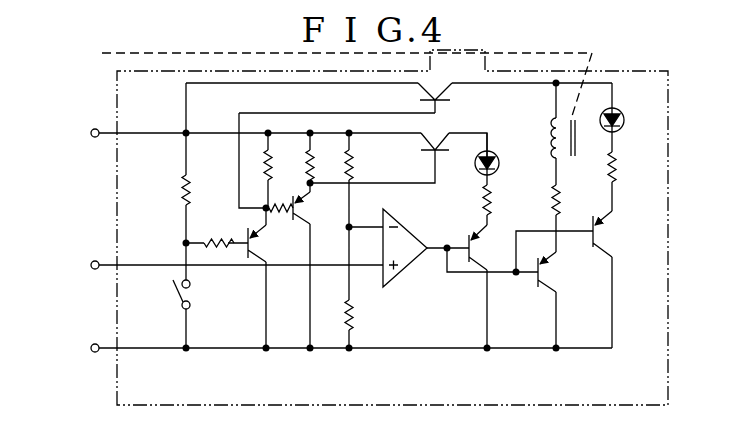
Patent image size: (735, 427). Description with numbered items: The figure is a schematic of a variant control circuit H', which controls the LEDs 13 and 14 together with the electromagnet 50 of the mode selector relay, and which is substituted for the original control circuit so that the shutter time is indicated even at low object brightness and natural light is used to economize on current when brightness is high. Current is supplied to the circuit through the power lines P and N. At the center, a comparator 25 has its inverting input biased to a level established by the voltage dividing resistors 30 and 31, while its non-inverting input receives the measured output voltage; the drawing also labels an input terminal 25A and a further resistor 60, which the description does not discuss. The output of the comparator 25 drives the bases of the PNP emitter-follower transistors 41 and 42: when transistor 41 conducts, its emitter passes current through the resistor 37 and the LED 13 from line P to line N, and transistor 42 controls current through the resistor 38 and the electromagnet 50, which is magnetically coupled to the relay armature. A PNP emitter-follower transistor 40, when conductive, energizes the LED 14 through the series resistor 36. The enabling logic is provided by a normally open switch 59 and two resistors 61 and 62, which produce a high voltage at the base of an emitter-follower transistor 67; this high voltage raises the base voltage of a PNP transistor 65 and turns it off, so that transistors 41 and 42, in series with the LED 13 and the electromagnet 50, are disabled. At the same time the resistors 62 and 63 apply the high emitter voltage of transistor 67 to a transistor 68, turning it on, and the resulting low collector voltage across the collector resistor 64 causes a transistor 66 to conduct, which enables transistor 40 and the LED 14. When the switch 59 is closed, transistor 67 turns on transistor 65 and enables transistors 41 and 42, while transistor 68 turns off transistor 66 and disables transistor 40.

The LED 13 is at (624, 117).
The LED 14 is at (498, 158).
The comparator 25 is at (405, 273).
The input terminal 25A is at (222, 266).
The voltage dividing resistor 30 is at (357, 165).
The voltage dividing resistor 31 is at (343, 305).
The series resistor 36 is at (495, 203).
The resistor 37 is at (620, 166).
The resistor 38 is at (562, 200).
The PNP emitter follower transistor 40 is at (479, 245).
The PNP emitter-follower transistor 41 is at (604, 233).
The PNP emitter-follower transistor 42 is at (545, 290).
The electromagnet 50 is at (577, 133).
The normally open switch 59 is at (172, 291).
The resistor 60 is at (178, 193).
The resistor 61 is at (219, 236).
The resistor 62 is at (281, 215).
The resistor 63 is at (272, 171).
The collector resistor 64 is at (316, 168).
The PNP transistor 65 is at (435, 96).
The transistor 66 is at (438, 145).
The emitter-follower transistor 67 is at (257, 262).
The transistor 68 is at (302, 209).
The power source line P is at (217, 132).
The power line N is at (218, 350).
The control circuit H' is at (691, 197).